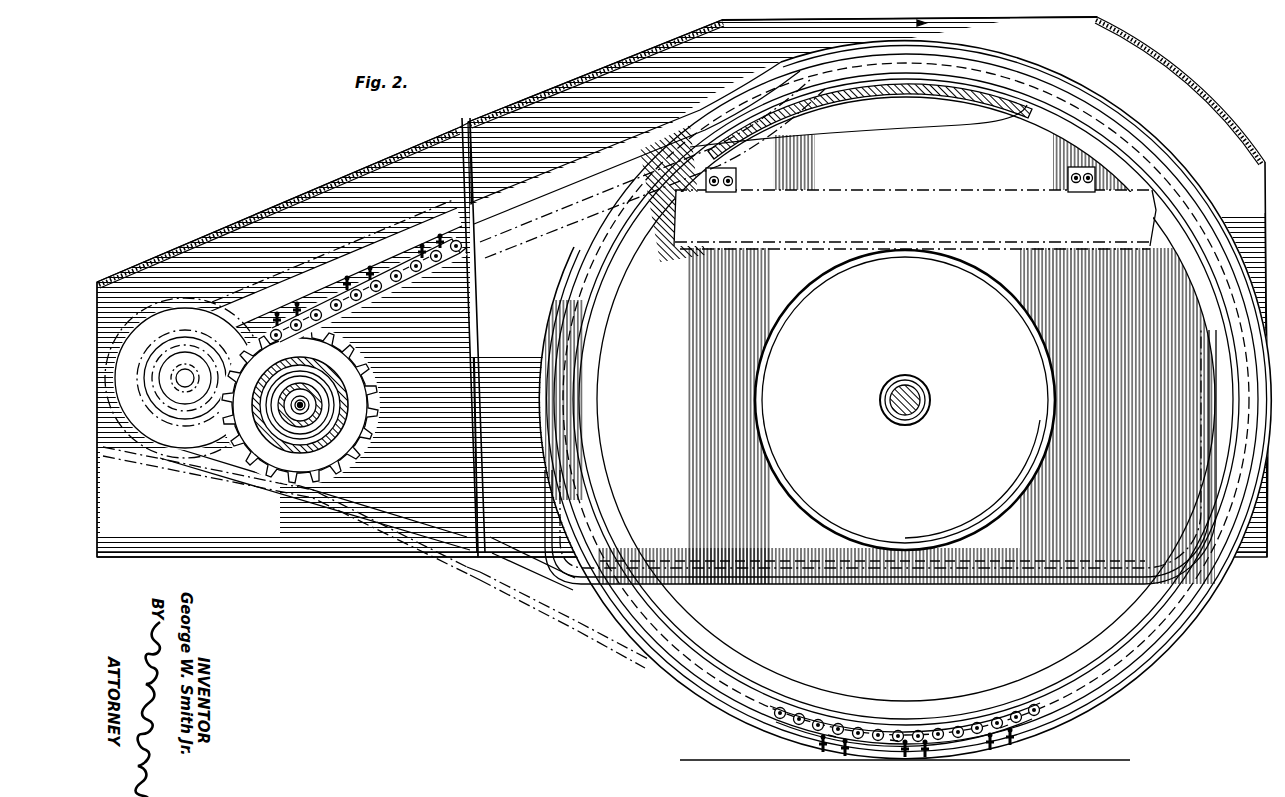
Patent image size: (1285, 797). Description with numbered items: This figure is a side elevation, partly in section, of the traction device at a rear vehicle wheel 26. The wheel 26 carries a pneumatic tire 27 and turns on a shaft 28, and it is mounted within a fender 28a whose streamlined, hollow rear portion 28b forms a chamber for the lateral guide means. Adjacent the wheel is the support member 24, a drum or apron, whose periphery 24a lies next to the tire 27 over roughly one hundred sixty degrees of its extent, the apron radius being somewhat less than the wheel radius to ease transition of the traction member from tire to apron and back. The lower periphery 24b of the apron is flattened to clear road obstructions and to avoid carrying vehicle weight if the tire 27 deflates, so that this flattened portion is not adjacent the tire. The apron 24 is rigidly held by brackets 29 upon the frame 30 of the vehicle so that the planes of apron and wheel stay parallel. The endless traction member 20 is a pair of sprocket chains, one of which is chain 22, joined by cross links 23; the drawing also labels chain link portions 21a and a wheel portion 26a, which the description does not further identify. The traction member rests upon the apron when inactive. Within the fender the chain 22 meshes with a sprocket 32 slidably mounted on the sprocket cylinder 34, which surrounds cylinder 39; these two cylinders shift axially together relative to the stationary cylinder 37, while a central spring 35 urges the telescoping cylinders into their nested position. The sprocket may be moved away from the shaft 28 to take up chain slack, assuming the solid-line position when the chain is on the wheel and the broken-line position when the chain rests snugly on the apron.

The endless traction member 20 is at (558, 627).
The chain link lugs 21a is at (397, 284).
The sprocket chain 22 is at (462, 251).
The cross links 23 is at (373, 273).
The support member 24 is at (880, 344).
The periphery 24a is at (883, 90).
The lower periphery 24b is at (968, 590).
The vehicle wheel 26 is at (735, 627).
The belt upper run 26a is at (692, 118).
The pneumatic tire 27 is at (1165, 655).
The shaft 28 is at (912, 385).
The fender 28a is at (1172, 70).
The rear portion 28b is at (368, 163).
The brackets 29 is at (737, 176).
The frame 30 is at (950, 190).
The sprocket 32 is at (348, 348).
The sprocket cylinder 34 is at (292, 440).
The spring 35 is at (335, 380).
The cylinder 37 is at (345, 420).
The cylinder 39 is at (312, 402).